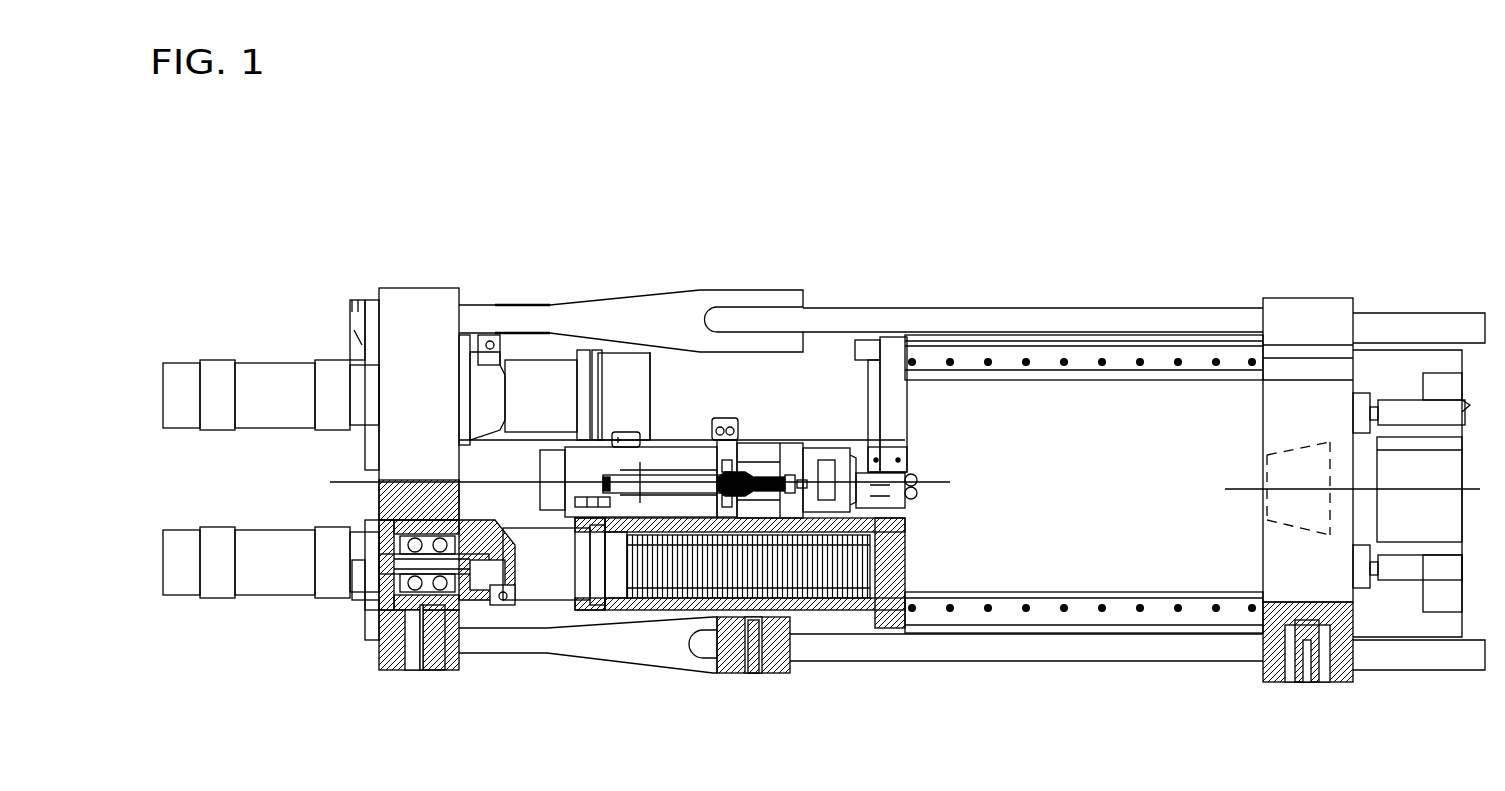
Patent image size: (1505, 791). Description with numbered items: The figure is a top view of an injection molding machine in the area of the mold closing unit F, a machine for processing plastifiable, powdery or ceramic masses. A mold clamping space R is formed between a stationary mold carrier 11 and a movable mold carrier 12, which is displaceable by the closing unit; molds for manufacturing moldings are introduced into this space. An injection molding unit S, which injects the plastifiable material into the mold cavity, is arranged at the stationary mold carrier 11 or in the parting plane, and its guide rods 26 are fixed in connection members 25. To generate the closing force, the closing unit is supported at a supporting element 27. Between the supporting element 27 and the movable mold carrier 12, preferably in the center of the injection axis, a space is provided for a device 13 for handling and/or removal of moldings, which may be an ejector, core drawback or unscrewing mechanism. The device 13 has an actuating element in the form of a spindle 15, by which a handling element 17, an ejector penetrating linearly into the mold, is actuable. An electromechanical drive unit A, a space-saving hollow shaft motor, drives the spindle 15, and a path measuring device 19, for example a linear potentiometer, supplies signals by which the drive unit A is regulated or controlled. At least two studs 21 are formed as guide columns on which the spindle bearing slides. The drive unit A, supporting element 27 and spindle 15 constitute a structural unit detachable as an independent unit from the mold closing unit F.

The supporting element 27 is at (400, 305).
The mold closing unit F is at (932, 302).
The stationary mold carrier 11 is at (1292, 325).
The movable mold carrier 12 is at (885, 418).
The path measuring device 19 is at (630, 440).
The drive unit A is at (577, 455).
The device for handling and/or removal of moldings 13 is at (700, 442).
The studs 21 is at (747, 452).
The spindle 15 is at (796, 455).
The handling element 17 is at (915, 478).
The mold clamping space R is at (1092, 471).
The injection molding unit S is at (1420, 486).
The connection members 25 is at (1363, 406).
The guide rods 26 is at (1402, 573).